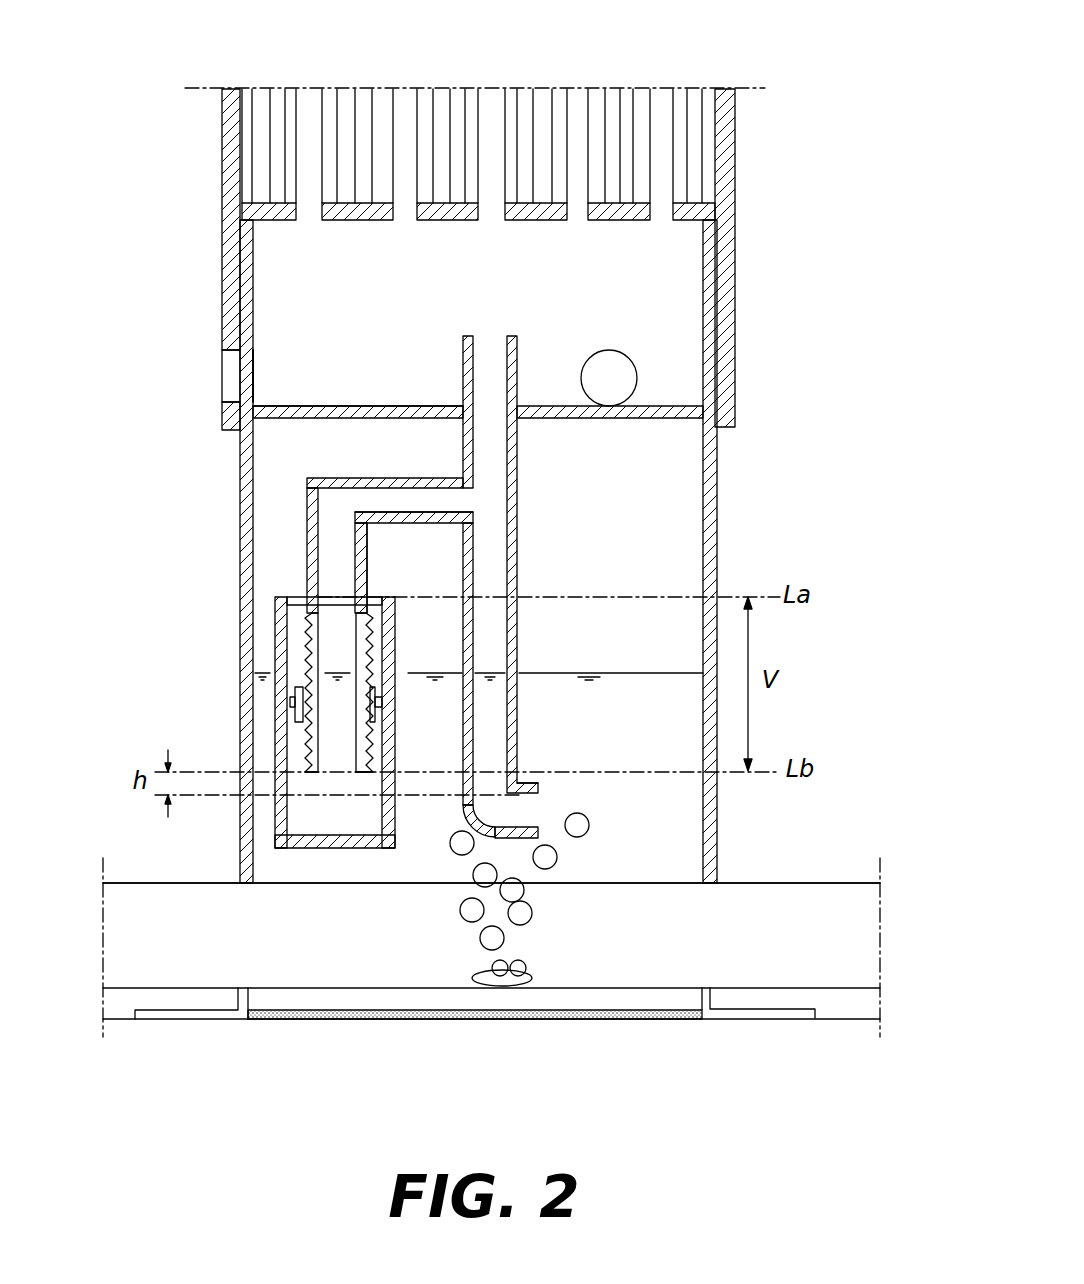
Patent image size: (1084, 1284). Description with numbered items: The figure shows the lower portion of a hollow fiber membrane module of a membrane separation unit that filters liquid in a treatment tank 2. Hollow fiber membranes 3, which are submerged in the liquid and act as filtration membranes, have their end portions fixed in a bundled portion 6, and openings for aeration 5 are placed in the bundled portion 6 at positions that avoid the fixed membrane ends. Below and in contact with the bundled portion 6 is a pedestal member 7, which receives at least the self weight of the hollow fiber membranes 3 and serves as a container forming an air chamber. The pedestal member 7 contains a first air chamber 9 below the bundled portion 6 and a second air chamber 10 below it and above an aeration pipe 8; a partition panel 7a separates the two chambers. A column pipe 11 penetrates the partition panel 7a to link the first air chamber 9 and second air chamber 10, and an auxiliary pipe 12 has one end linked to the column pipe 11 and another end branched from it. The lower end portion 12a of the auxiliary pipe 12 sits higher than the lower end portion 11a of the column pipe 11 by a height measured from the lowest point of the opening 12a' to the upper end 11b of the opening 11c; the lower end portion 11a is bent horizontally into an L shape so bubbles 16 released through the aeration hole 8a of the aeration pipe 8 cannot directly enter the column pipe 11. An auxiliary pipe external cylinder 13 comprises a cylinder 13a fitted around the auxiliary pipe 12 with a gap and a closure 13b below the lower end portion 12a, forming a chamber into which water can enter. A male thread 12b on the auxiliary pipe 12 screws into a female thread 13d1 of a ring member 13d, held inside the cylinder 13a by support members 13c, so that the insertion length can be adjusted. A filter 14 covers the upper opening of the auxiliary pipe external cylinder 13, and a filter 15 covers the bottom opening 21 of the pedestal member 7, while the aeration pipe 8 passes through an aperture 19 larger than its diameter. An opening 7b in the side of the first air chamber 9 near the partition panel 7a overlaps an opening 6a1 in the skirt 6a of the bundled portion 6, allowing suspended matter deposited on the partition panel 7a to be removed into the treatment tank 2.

The treatment tank 2 is at (845, 535).
The hollow fiber membranes 3 is at (546, 97).
The openings for aeration 5 is at (492, 97).
The bundled portion 6 is at (740, 174).
The skirt 6a is at (735, 345).
The opening 6a1 is at (228, 376).
The pedestal member 7 is at (717, 503).
The partition panel 7a is at (562, 420).
The opening 7b is at (253, 362).
The aeration pipe 8 is at (772, 975).
The aeration hole 8a is at (503, 986).
The first air chamber 9 is at (378, 313).
The second air chamber 10 is at (610, 495).
The column pipe 11 is at (518, 722).
The lower end portion of the column pipe 11a is at (490, 830).
The upper end of the opening 11b is at (547, 782).
The opening 11c is at (527, 813).
The auxiliary pipe 12 is at (298, 513).
The lower end portion of the auxiliary pipe 12a is at (275, 805).
The opening of the auxiliary pipe 12a' is at (305, 859).
The male thread 12b is at (305, 650).
The auxiliary pipe external cylinder 13 is at (266, 812).
The cylinder 13a is at (385, 600).
The closure 13b is at (375, 760).
The support member 13c is at (378, 703).
The ring member 13d is at (367, 692).
The female thread 13d1 is at (350, 727).
The filter 14 is at (305, 598).
The filter 15 is at (648, 1020).
The bubbles 16 is at (585, 827).
The aperture 19 is at (720, 881).
The bottom opening 21 is at (248, 1020).